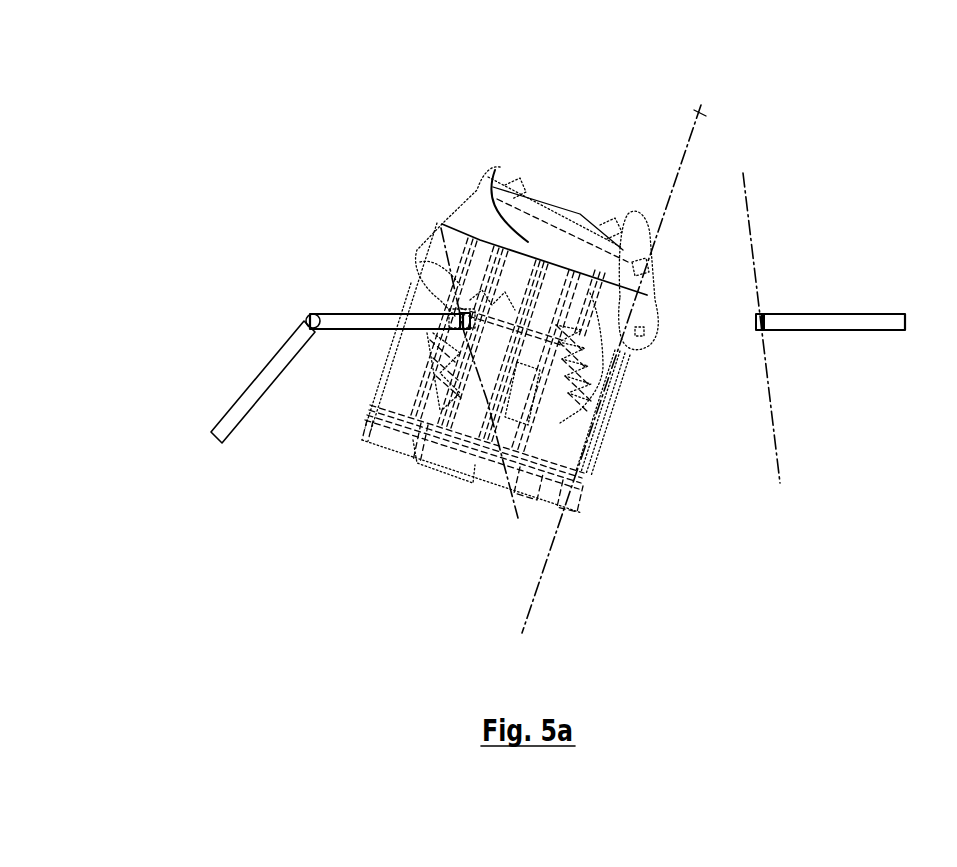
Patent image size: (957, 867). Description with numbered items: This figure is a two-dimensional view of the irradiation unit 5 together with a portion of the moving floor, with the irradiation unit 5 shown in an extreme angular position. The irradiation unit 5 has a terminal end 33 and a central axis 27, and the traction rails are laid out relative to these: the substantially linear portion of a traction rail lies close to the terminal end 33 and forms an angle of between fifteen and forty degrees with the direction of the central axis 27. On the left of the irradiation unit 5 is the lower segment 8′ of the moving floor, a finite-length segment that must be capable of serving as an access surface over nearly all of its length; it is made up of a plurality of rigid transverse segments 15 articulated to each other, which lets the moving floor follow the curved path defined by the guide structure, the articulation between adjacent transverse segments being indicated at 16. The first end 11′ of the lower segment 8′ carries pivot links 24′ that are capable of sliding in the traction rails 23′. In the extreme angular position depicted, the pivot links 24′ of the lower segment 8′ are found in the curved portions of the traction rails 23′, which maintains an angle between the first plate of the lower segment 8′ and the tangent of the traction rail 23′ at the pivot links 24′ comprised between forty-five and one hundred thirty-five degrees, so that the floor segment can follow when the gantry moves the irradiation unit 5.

The irradiation unit 5 is at (702, 487).
The lower segment 8′ is at (320, 388).
The first end of the lower segment 11′ is at (445, 321).
The rigid transverse segment 15 is at (367, 322).
The pivot joint 16 is at (313, 330).
The traction rail 23′ is at (483, 326).
The pivot link 24′ is at (452, 328).
The central axis 27 is at (614, 358).
The terminal end 33 is at (647, 190).